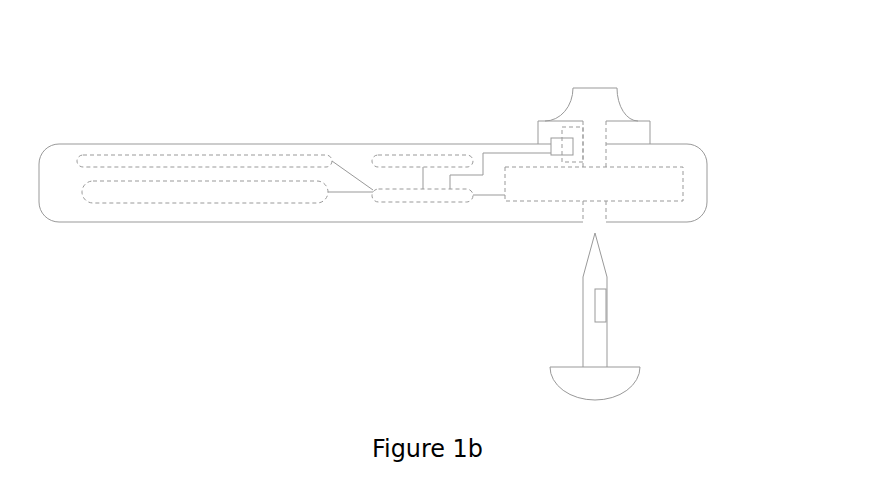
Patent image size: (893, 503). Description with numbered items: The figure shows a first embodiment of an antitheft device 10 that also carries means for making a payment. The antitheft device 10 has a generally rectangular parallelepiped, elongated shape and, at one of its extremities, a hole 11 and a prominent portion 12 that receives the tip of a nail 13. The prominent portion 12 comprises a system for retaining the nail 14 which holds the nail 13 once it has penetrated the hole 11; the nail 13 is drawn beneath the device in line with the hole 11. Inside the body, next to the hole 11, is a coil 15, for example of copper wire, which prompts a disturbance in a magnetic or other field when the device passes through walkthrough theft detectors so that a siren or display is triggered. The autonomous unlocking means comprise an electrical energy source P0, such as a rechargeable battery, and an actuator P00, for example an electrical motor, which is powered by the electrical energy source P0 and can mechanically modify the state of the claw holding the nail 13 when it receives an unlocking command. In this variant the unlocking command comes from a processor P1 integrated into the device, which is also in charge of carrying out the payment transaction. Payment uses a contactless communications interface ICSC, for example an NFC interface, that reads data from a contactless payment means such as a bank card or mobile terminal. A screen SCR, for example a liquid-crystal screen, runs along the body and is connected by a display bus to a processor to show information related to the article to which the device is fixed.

The antitheft device 10 is at (279, 81).
The screen SCR is at (234, 144).
The electrical energy source P0 is at (201, 216).
The processor P1 is at (402, 215).
The contactless communications interface ICSC is at (437, 142).
The actuator P00 is at (540, 126).
The system for retaining the nail 14 is at (568, 115).
The hole 11 is at (602, 115).
The prominent portion 12 is at (649, 112).
The coil 15 is at (519, 212).
The nail 13 is at (618, 340).